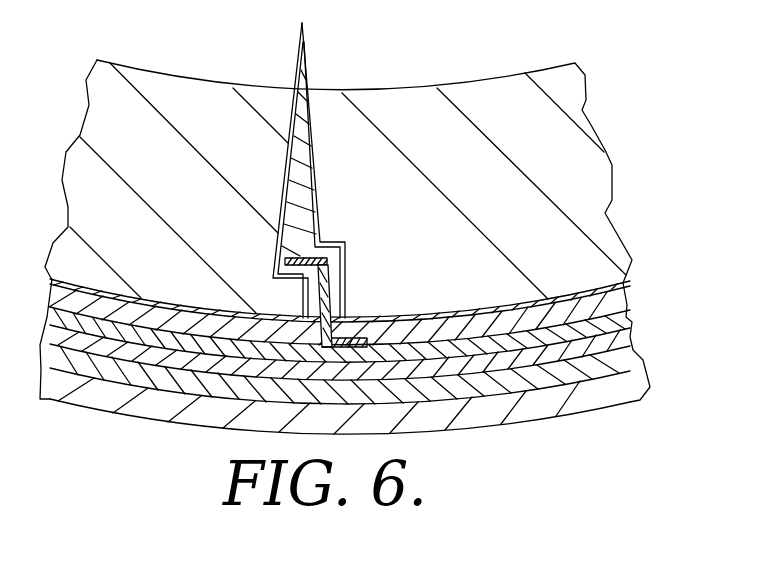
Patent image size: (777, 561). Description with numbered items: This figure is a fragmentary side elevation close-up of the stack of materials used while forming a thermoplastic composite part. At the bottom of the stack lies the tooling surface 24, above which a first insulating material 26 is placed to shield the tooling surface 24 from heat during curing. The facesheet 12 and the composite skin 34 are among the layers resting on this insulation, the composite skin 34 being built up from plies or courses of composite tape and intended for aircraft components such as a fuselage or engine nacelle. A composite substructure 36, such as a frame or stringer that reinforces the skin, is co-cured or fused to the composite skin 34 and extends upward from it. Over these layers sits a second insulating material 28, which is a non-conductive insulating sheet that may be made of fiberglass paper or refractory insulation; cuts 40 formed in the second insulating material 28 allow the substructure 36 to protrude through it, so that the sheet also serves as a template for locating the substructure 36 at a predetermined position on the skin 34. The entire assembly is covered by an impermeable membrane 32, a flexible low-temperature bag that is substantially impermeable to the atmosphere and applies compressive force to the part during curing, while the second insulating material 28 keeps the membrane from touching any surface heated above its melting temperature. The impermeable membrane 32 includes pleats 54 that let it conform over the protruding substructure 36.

The facesheet 12 is at (631, 337).
The tooling surface 24 is at (630, 390).
The first insulating material 26 is at (641, 360).
The second insulating material 28 is at (617, 302).
The impermeable membrane 32 is at (596, 256).
The composite skin 34 is at (628, 322).
The composite substructure 36 is at (328, 295).
The cuts 40 is at (266, 313).
The pleats 54 is at (308, 60).